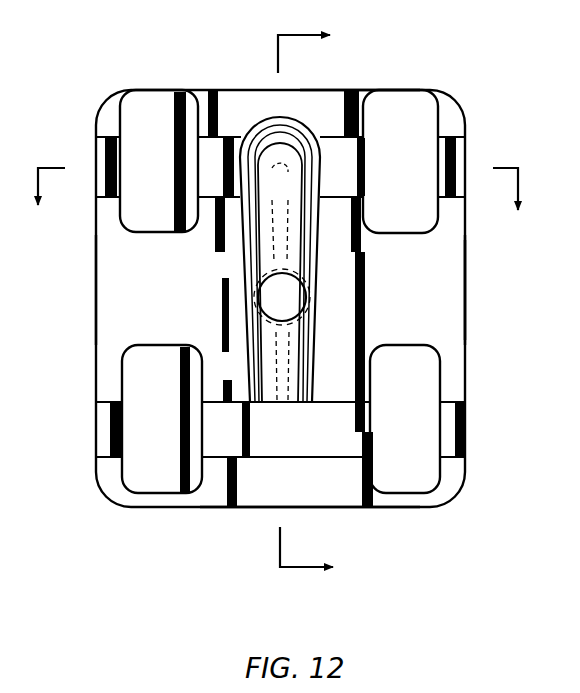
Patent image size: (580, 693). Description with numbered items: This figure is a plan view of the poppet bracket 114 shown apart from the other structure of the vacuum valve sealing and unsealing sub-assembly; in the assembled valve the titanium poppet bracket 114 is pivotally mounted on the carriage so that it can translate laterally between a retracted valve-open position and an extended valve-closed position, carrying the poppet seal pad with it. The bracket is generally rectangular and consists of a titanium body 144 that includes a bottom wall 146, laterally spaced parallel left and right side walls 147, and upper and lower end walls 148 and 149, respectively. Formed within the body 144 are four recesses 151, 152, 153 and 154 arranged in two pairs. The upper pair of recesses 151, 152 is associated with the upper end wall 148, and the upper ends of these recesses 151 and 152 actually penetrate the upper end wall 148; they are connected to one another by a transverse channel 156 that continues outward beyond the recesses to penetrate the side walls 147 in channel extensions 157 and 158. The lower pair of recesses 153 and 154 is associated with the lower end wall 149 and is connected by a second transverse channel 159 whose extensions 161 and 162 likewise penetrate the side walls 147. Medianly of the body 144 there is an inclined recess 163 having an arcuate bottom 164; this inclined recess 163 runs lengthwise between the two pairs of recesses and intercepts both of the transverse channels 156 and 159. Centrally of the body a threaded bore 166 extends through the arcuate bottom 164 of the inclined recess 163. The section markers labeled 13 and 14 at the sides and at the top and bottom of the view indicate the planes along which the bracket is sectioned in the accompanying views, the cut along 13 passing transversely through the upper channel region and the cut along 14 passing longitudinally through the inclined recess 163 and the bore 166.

The poppet bracket 114 is at (343, 87).
The body 144 is at (469, 357).
The bottom wall 146 is at (417, 332).
The side walls 147 is at (496, 288).
The upper end wall 148 is at (237, 89).
The lower end wall 149 is at (211, 489).
The recess 151 is at (165, 126).
The recess 152 is at (411, 126).
The recess 153 is at (169, 396).
The recess 154 is at (411, 396).
The transverse channel 156 is at (347, 135).
The channel extension 157 is at (106, 146).
The channel extension 158 is at (455, 157).
The transverse channel 159 is at (236, 408).
The extension 161 is at (102, 442).
The extension 162 is at (461, 428).
The inclined recess 163 is at (246, 262).
The arcuate bottom 164 is at (296, 201).
The threaded bore 166 is at (298, 298).
The section line 13- 13 is at (278, 189).
The section line 14- 14 is at (305, 304).